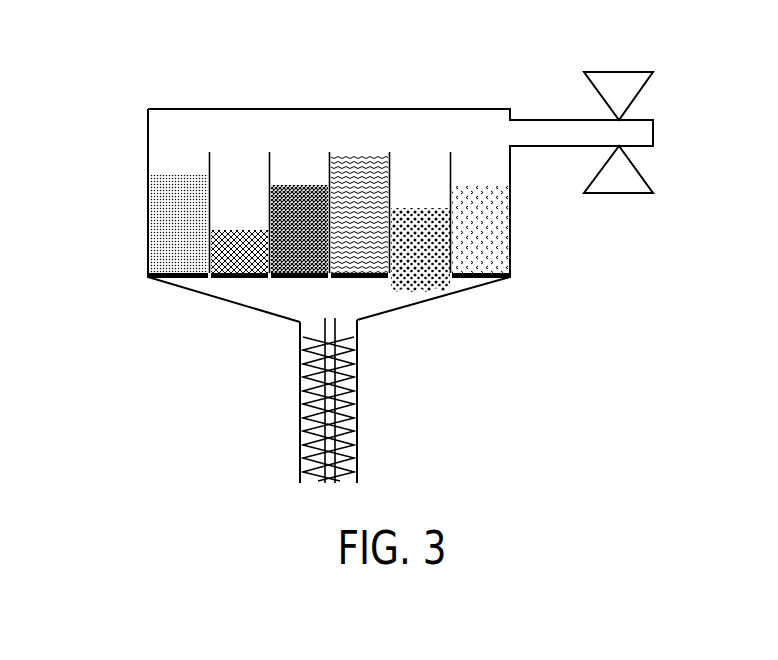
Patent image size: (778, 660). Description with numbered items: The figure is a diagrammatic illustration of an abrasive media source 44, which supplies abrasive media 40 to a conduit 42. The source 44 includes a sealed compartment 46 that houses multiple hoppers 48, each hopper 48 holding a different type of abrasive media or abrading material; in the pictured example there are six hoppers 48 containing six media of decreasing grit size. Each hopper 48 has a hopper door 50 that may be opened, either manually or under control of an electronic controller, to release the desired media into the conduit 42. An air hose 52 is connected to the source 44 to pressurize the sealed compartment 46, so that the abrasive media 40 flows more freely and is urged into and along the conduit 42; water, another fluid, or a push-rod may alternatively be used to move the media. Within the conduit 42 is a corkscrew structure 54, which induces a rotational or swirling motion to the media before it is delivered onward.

The abrasive media source 44 is at (115, 118).
The sealed compartment 46 is at (423, 109).
The hoppers 48 is at (181, 160).
The hopper door 50 is at (243, 279).
The air hose 52 is at (531, 147).
The abrasive media 40 is at (418, 288).
The corkscrew structure 54 is at (340, 414).
The conduit 42 is at (357, 455).